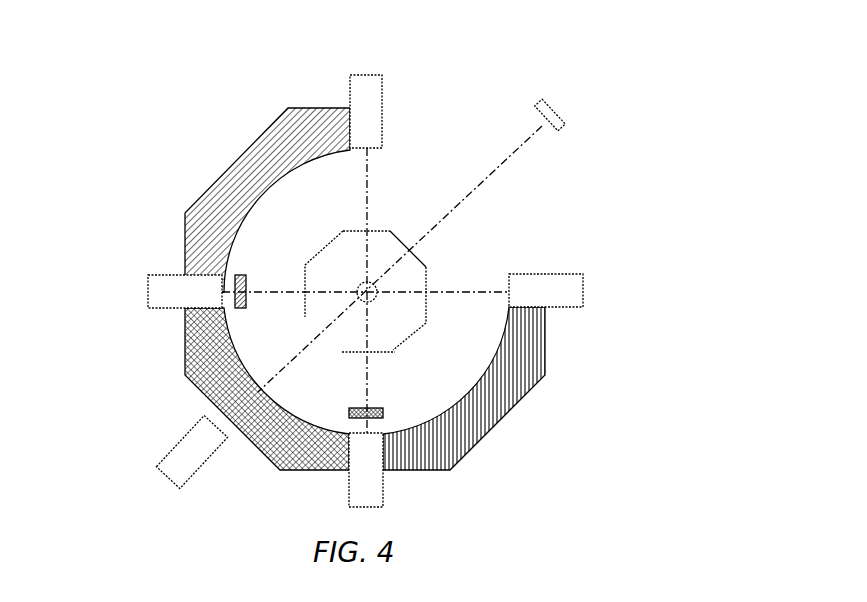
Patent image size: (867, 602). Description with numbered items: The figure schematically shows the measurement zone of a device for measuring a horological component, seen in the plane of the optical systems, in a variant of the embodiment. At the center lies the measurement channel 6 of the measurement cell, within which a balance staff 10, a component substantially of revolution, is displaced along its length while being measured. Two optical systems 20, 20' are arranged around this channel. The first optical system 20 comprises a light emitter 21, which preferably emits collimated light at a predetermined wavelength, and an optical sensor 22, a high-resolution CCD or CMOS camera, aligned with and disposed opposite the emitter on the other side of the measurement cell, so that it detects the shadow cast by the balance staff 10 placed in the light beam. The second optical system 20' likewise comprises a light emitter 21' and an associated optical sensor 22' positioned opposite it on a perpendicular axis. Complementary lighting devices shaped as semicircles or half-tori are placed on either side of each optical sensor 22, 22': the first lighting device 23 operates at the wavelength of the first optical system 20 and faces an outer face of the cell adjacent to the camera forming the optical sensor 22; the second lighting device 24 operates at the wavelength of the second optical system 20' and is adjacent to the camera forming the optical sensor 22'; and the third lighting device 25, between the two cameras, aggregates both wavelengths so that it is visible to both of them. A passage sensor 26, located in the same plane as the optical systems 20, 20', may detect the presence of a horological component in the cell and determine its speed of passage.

The measurement channel 6 is at (400, 277).
The balance staff 10 is at (376, 295).
The first optical system 20 is at (621, 290).
The second optical system 20' is at (324, 76).
The light emitter 21 is at (591, 281).
The light emitter 21' is at (296, 105).
The optical sensor 22 is at (141, 291).
The optical sensor 22' is at (429, 474).
The first lighting device 23 is at (243, 153).
The second lighting device 24 is at (503, 410).
The third lighting device 25 is at (253, 445).
The passage sensor 26 is at (173, 462).